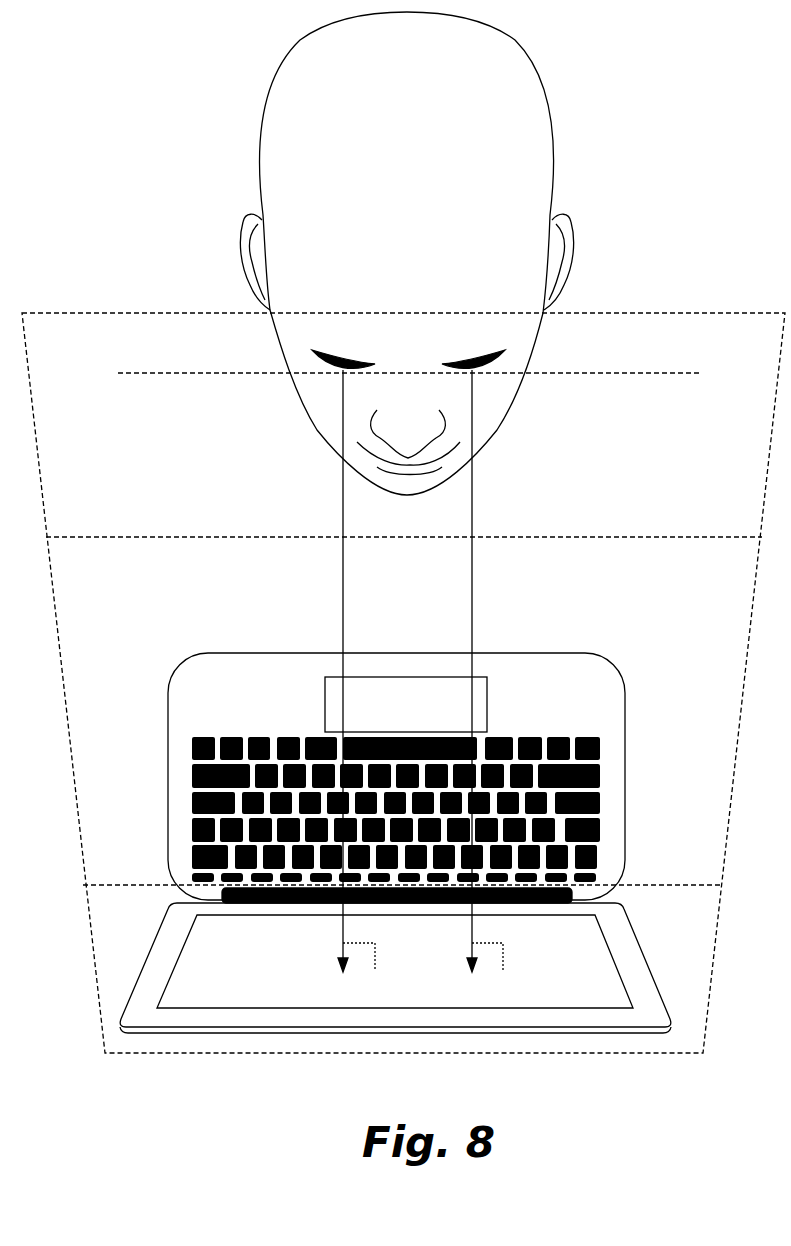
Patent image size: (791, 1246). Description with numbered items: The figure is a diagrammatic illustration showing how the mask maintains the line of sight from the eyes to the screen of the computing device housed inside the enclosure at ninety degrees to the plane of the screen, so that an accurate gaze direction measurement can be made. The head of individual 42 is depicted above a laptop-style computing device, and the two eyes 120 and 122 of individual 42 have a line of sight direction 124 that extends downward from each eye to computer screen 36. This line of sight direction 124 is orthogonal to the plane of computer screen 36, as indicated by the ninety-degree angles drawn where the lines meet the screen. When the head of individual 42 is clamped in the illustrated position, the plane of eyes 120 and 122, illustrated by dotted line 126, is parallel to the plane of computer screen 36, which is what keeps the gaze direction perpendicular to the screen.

The individual 42 is at (519, 158).
The eye 120 is at (502, 363).
The eye 122 is at (312, 363).
The line of sight direction 124 is at (343, 596).
The dotted line 126 is at (213, 374).
The computer screen 36 is at (253, 1027).